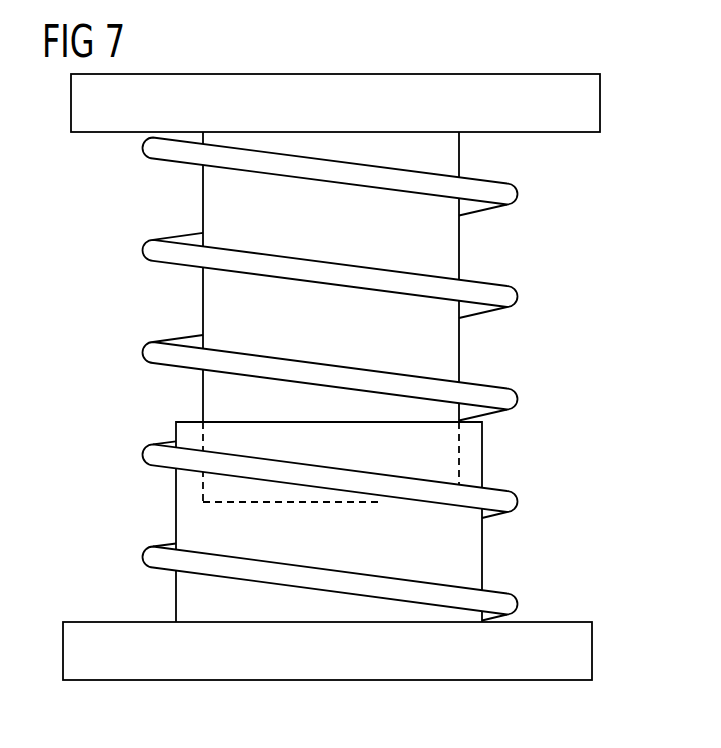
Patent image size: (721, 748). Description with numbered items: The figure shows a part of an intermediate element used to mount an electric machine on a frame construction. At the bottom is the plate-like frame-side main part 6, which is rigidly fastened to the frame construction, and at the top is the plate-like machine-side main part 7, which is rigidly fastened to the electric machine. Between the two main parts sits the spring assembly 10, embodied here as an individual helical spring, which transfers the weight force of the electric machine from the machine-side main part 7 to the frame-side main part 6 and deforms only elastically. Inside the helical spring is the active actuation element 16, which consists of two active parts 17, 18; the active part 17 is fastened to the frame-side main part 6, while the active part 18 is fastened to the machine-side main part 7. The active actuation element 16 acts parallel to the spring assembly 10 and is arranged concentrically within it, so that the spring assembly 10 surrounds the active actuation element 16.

The frame-side main part 6 is at (592, 652).
The machine-side main part 7 is at (600, 103).
The spring assembly 10 is at (517, 296).
The active actuation element 16 is at (321, 377).
The active part 17 is at (482, 550).
The active part 18 is at (459, 249).